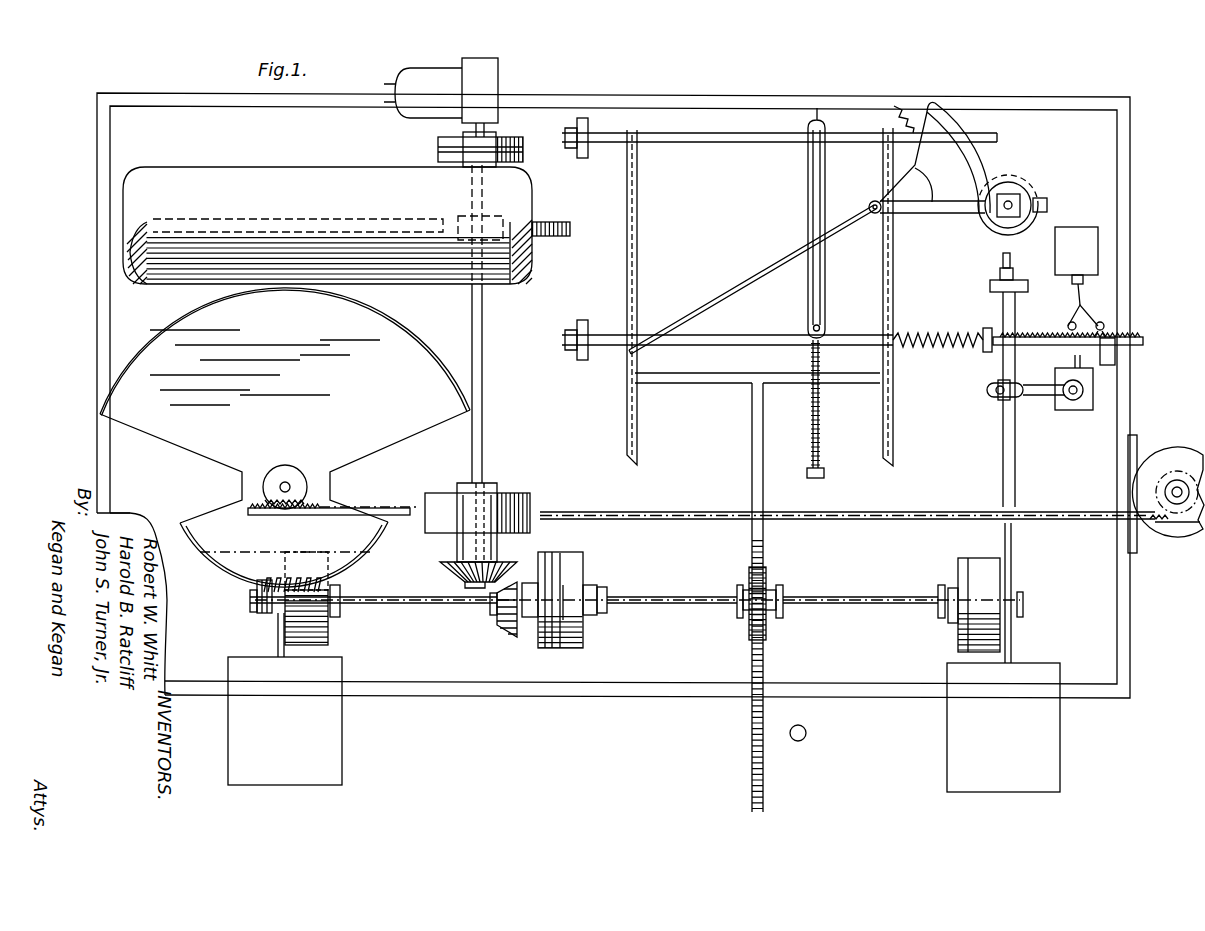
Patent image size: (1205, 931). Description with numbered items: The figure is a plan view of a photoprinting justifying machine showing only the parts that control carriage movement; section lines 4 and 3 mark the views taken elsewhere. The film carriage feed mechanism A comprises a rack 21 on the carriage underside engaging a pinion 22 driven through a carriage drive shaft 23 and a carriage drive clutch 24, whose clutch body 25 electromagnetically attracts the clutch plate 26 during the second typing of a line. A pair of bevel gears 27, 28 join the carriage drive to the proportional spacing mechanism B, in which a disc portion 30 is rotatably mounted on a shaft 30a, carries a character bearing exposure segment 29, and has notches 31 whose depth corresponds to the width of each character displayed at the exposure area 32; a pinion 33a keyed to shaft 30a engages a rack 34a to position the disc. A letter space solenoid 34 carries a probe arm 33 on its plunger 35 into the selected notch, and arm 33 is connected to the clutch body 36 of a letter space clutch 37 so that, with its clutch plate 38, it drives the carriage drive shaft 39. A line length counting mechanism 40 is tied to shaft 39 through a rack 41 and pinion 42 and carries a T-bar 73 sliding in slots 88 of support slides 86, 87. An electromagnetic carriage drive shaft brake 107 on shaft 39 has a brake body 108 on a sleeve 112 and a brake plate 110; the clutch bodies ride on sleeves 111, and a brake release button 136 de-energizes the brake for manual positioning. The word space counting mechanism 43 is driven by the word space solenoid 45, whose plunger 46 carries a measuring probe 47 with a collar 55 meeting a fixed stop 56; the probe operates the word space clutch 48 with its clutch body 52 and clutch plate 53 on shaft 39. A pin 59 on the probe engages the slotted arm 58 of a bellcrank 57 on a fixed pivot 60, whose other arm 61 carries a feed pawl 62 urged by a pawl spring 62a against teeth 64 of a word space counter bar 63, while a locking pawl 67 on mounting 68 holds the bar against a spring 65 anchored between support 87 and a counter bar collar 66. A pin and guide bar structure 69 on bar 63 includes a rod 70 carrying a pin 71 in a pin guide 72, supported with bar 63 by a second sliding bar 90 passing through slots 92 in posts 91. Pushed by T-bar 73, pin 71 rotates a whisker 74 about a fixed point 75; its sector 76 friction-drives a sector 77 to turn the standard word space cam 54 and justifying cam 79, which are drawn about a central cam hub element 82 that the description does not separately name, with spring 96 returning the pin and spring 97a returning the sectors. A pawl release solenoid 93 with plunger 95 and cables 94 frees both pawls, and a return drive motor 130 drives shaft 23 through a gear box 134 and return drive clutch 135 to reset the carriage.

The section line 4- 4 is at (170, 757).
The section line 3- 3 is at (1127, 726).
The return drive motor 130 is at (421, 78).
The gear box 134 is at (488, 75).
The return drive clutch 135 is at (440, 155).
The exposure area 32 is at (292, 283).
The pinion 22 is at (441, 218).
The rack 21 is at (560, 218).
The carriage drive shaft 23 is at (484, 381).
The character bearing exposure segment 29 is at (399, 322).
The disc portion 30 is at (312, 377).
The letter space solenoid 34 is at (305, 721).
The shaft 30a is at (281, 481).
The pinion 33a is at (300, 478).
The rack 34a is at (328, 510).
The probe arm 33 is at (268, 606).
The notches 31 is at (258, 593).
The clutch body 36 is at (307, 646).
The plunger 35 is at (279, 645).
The letter space clutch 37 is at (345, 615).
The clutch plate 38 is at (341, 637).
The carriage drive shaft 39 is at (428, 608).
The clutch plate 26 is at (430, 500).
The carriage drive clutch 24 is at (493, 482).
The clutch body 25 is at (436, 531).
The sleeves 111 is at (517, 506).
The bevel gear 27 is at (445, 574).
The bevel gear 28 is at (500, 631).
The carriage drive shaft brake 107 is at (586, 655).
The brake plate 110 is at (541, 646).
The brake body 108 is at (585, 637).
The sleeve 112 is at (578, 590).
The rack 41 is at (766, 557).
The pinion 42 is at (767, 585).
The line length counting mechanism 40 is at (740, 400).
The support slide 86 is at (628, 180).
The support slide 87 is at (893, 289).
The T-bar 73 is at (757, 373).
The second sliding bar 90 is at (770, 135).
The slots 92 is at (587, 134).
The posts 91 is at (578, 153).
The slot 88 is at (637, 423).
The pin guide 72 is at (809, 207).
The pin 71 is at (822, 332).
The fixed point 75 is at (870, 203).
The whisker 74 is at (710, 318).
The pin and guide bar structure 69 is at (798, 325).
The rod 70 is at (819, 394).
The spring 96 is at (811, 402).
The sector 76 is at (982, 163).
The spring 97a is at (924, 90).
The sector 77 is at (1023, 193).
The justifying cam 79 is at (1040, 207).
The standard word space cam 54 is at (1031, 222).
The cam hub 82 is at (1012, 196).
The pawl release solenoid 93 is at (1085, 239).
The pawl release solenoid plunger 95 is at (1071, 281).
The cable 94 is at (1081, 308).
The feed pawl 62 is at (1066, 325).
The pawl spring 62a is at (1066, 329).
The locking pawl 67 is at (1106, 323).
The teeth 64 is at (1124, 338).
The mounting 68 is at (1117, 357).
The arm 61 is at (1073, 359).
The bellcrank 57 is at (1052, 406).
The fixed pivot 60 is at (1073, 401).
The slotted arm 58 is at (1048, 388).
The pin 59 is at (992, 394).
The spring 65 is at (908, 347).
The counter bar collar 66 is at (985, 333).
The word space counter bar 63 is at (988, 353).
The word space counting mechanism 43 is at (998, 306).
The measuring probe 47 is at (1016, 471).
The collar 55 is at (1002, 267).
The fixed stop 56 is at (990, 287).
The word space clutch body 52 is at (987, 560).
The word space clutch plate 53 is at (960, 643).
The word space clutch 48 is at (950, 572).
The word space solenoid plunger 46 is at (1012, 658).
The word space solenoid 45 is at (1015, 707).
The brake release button 136 is at (806, 735).
The film carriage feed mechanism A is at (500, 306).
The proportional spacing mechanism B is at (212, 621).